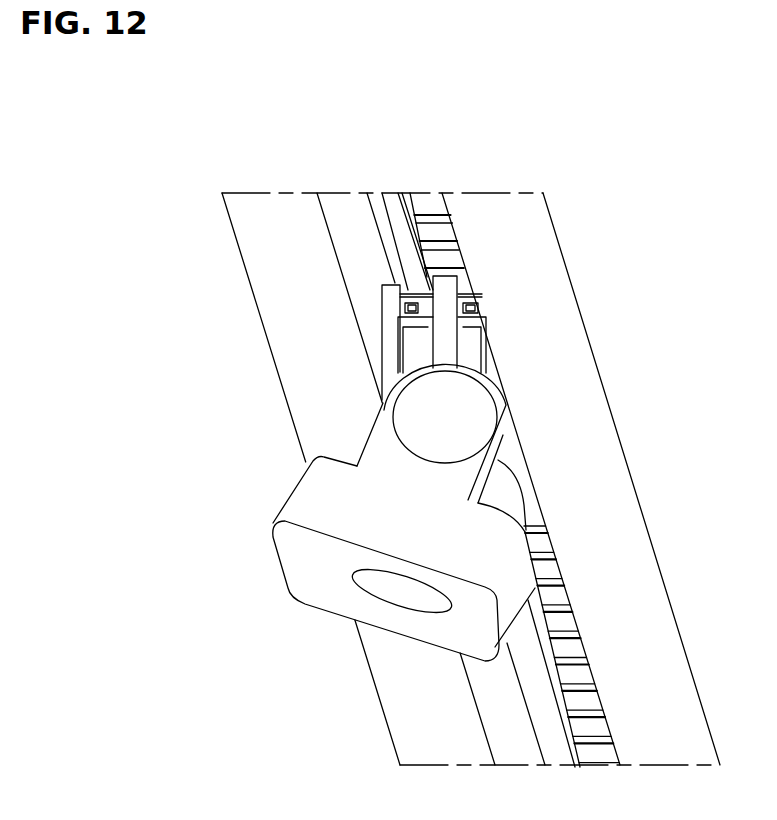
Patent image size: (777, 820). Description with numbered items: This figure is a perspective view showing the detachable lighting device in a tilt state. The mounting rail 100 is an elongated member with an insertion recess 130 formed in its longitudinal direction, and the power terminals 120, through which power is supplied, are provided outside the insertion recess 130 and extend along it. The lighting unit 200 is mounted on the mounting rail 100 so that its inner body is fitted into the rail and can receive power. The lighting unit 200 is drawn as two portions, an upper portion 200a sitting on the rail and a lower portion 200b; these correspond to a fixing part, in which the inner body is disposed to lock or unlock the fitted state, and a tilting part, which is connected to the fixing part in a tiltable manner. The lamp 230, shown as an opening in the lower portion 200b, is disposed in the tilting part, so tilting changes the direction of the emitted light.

The mounting rail 100 is at (532, 305).
The power terminals 120 is at (390, 235).
The insertion recess 130 is at (433, 235).
The lighting unit 200 is at (120, 380).
The clamp portion 200a is at (448, 335).
The base block 200b is at (330, 605).
The lamp 230 is at (388, 587).